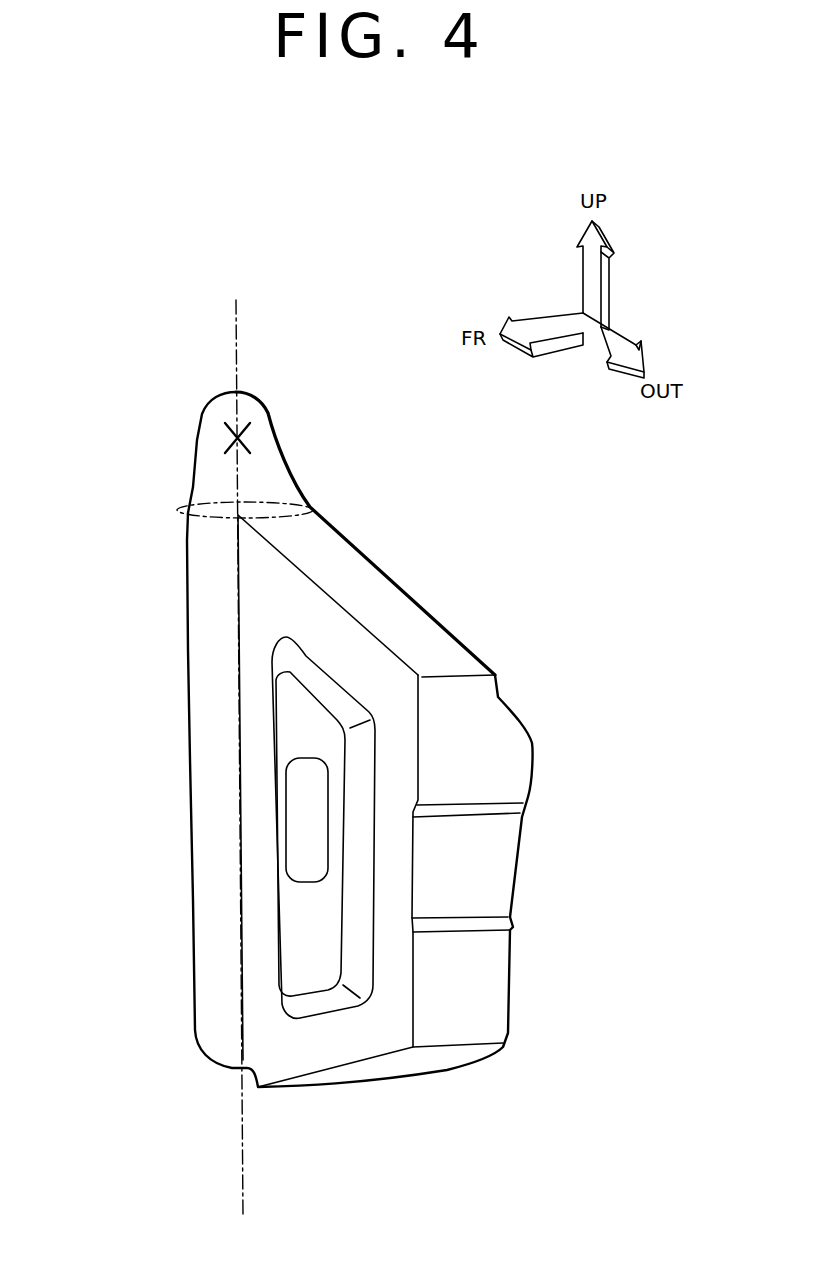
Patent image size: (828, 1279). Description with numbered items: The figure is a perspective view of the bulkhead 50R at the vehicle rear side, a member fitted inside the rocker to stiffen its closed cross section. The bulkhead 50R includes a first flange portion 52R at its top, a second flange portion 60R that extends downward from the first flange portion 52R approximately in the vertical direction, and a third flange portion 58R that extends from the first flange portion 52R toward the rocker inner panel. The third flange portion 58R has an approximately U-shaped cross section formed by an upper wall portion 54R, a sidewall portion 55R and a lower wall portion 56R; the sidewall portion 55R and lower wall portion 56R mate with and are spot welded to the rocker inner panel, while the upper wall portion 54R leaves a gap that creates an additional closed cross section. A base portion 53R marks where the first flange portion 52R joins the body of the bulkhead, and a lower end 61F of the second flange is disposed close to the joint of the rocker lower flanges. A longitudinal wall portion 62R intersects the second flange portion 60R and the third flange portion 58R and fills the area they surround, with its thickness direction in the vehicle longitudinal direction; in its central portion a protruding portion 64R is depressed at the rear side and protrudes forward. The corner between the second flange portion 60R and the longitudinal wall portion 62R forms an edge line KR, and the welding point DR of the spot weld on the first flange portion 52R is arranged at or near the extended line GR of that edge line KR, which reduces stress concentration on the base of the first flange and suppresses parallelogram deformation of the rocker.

The bulkhead 50R is at (376, 435).
The extended line GR is at (238, 348).
The welding point DR is at (228, 438).
The first flange portion 52R is at (273, 467).
The boundary / transition section 53R is at (278, 500).
The upper wall portion 54R is at (342, 567).
The sidewall portion 55R is at (510, 772).
The lower wall portion 56R is at (410, 1065).
The third flange portion 58R is at (465, 621).
The edge line KR is at (237, 607).
The second flange portion 60R is at (202, 750).
The lower front corner 61F is at (230, 1070).
The longitudinal wall portion 62R is at (258, 858).
The protruding portion 64R is at (287, 712).